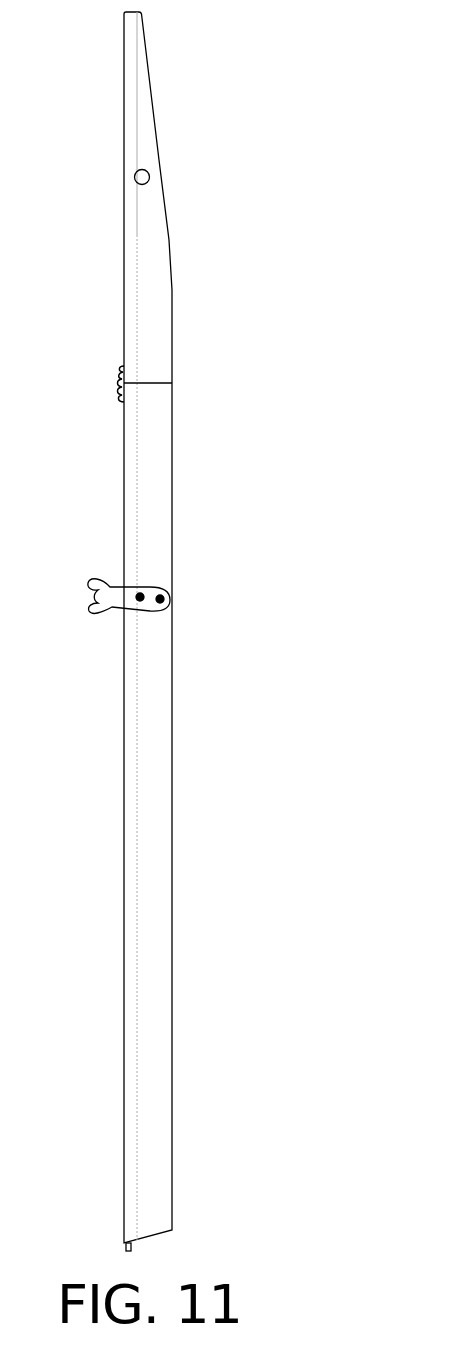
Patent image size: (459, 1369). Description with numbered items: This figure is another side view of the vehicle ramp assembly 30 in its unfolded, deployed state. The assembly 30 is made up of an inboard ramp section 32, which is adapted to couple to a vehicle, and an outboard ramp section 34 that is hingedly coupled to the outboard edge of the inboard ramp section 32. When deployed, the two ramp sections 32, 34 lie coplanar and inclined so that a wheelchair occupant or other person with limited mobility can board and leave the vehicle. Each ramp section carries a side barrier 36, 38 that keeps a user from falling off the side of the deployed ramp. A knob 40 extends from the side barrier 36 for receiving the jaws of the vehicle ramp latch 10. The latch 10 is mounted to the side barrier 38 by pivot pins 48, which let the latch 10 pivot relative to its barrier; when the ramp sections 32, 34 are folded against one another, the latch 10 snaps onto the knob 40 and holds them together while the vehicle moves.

The vehicle ramp assembly 30 is at (170, 90).
The inboard ramp section 32 is at (124, 941).
The outboard ramp section 34 is at (124, 282).
The side barrier 36 is at (166, 310).
The side barrier 38 is at (166, 822).
The knob 40 is at (150, 176).
The pivot pins 48 is at (145, 593).
The vehicle ramp latch 10 is at (120, 597).